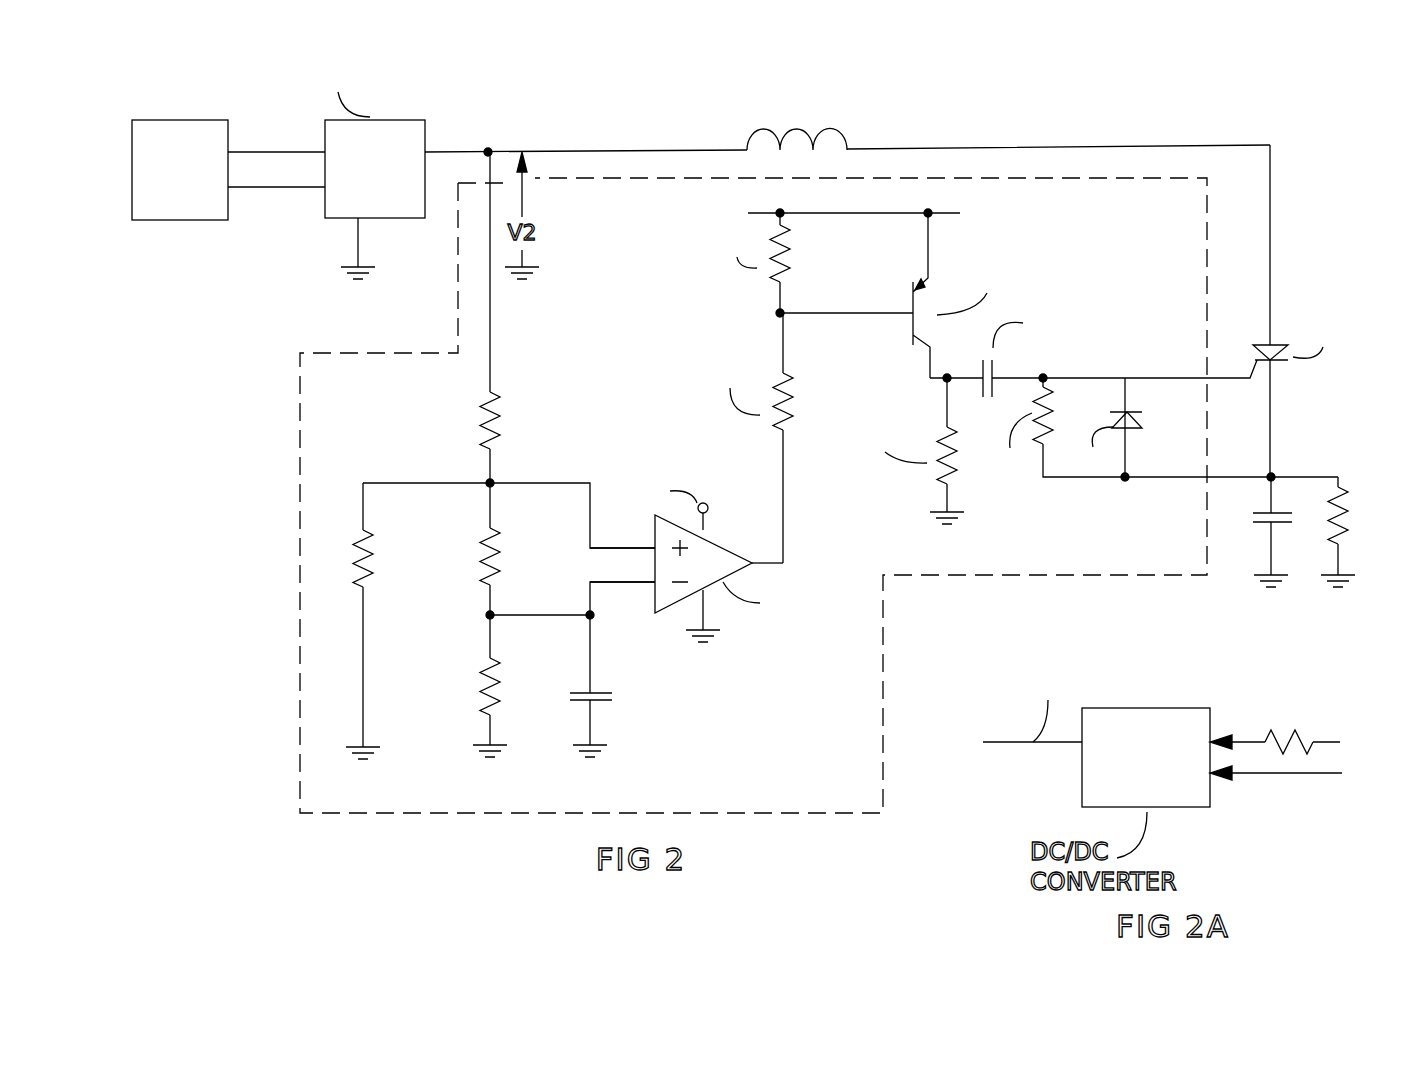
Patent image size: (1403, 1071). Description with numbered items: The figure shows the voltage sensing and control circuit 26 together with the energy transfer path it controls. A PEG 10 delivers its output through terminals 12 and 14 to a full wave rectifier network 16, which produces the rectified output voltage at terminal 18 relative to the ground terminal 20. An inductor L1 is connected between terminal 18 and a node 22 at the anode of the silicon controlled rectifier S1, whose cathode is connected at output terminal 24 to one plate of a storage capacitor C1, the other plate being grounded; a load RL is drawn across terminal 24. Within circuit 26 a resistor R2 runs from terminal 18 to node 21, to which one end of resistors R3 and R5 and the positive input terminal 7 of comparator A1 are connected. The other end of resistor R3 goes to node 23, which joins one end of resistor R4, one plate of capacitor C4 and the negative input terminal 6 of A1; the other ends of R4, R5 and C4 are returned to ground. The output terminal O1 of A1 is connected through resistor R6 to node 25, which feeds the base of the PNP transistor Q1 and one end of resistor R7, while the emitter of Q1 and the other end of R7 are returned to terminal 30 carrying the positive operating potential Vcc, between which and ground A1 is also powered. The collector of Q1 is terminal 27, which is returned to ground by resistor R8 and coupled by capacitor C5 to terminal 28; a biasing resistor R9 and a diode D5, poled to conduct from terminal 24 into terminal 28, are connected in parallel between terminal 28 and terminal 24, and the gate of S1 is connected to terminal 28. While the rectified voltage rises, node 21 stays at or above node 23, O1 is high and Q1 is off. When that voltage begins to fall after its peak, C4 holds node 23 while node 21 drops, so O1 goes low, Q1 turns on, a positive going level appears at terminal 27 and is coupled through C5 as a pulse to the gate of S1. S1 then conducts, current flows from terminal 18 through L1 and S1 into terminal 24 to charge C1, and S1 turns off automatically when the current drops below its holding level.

In FIG. 2, the PEG 10 is at (198, 116).
In FIG. 2, the terminal 12 is at (312, 150).
In FIG. 2, the terminal 14 is at (305, 187).
In FIG. 2, the full wave rectifier network 16 is at (410, 118).
In FIG. 2, the terminal 18 is at (545, 148).
In FIG. 2A, the terminal 18 is at (1340, 742).
In FIG. 2, the ground terminal 20 is at (373, 250).
In FIG. 2, the node 21 is at (487, 488).
In FIG. 2, the node 22 is at (1168, 143).
In FIG. 2, the node 23 is at (488, 617).
In FIG. 2, the output terminal 24 is at (1277, 473).
In FIG. 2A, the output terminal 24 is at (1260, 775).
In FIG. 2, the node 25 is at (770, 313).
In FIG. 2, the voltage sensing and control circuit 26 is at (300, 487).
In FIG. 2, the terminal 27 is at (938, 388).
In FIG. 2, the terminal 28 is at (1046, 375).
In FIG. 2, the terminal 30 is at (805, 213).
In FIG. 2A, the terminal 30 is at (992, 742).
In FIG. 2, the negative input terminal 6 is at (643, 582).
In FIG. 2, the positive input terminal 7 is at (637, 548).
In FIG. 2, the inductor L1 is at (797, 126).
In FIG. 2, the resistor R2 is at (468, 317).
In FIG. 2, the resistor R3 is at (514, 549).
In FIG. 2, the resistor R4 is at (513, 680).
In FIG. 2, the resistor R5 is at (390, 615).
In FIG. 2, the resistor R6 is at (753, 438).
In FIG. 2, the resistor R7 is at (747, 263).
In FIG. 2, the resistor R8 is at (909, 445).
In FIG. 2, the biasing resistor R9 is at (1058, 427).
In FIG. 2, the storage capacitor C1 is at (1254, 532).
In FIG. 2, the capacitor C4 is at (613, 680).
In FIG. 2, the coupling capacitor C5 is at (1019, 353).
In FIG. 2, the diode D5 is at (1111, 429).
In FIG. 2, the PNP bipolar transistor Q1 is at (957, 295).
In FIG. 2, the silicon controlled rectifier S1 is at (1299, 395).
In FIG. 2, the comparator A1 is at (725, 572).
In FIG. 2, the output terminal O1 is at (765, 566).
In FIG. 2, the load resistor RL is at (1357, 532).